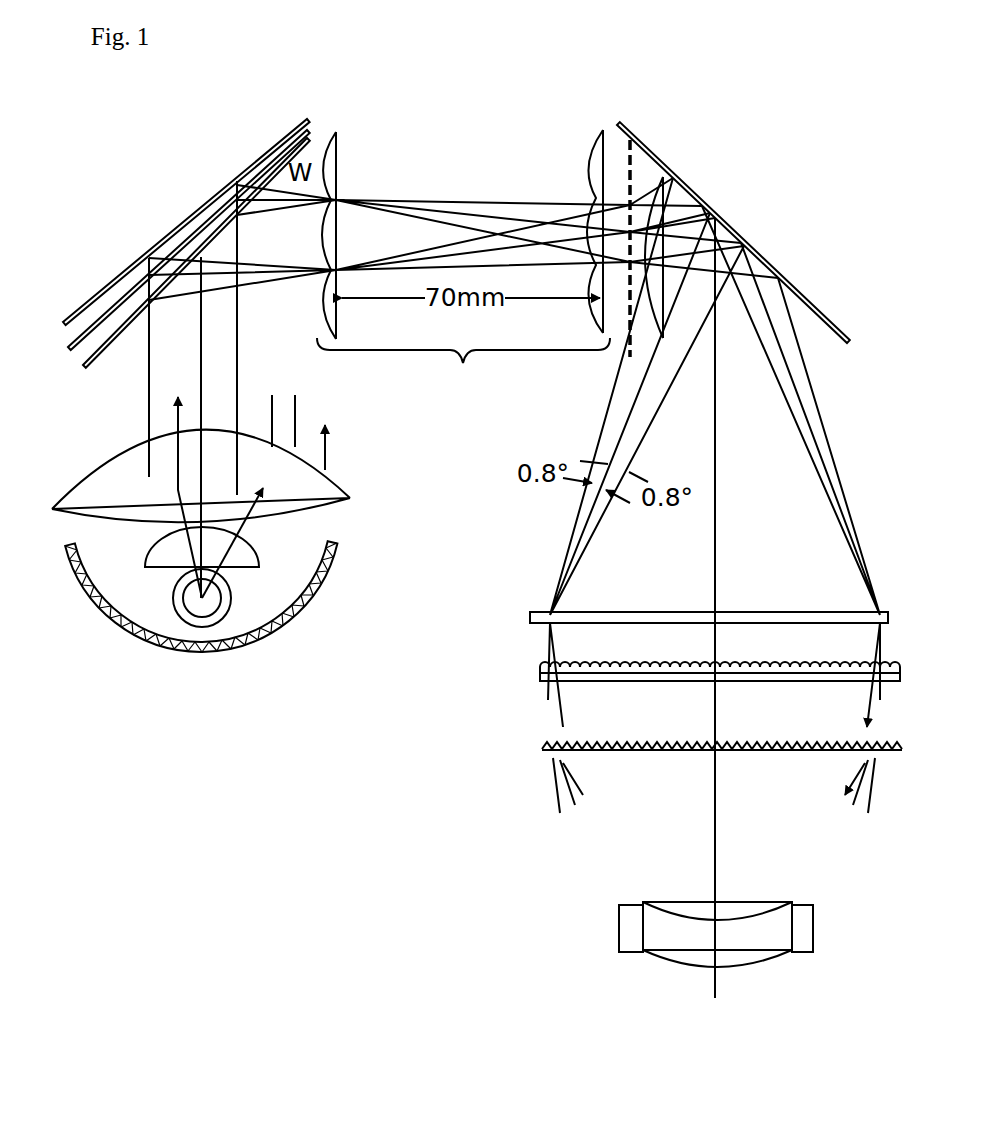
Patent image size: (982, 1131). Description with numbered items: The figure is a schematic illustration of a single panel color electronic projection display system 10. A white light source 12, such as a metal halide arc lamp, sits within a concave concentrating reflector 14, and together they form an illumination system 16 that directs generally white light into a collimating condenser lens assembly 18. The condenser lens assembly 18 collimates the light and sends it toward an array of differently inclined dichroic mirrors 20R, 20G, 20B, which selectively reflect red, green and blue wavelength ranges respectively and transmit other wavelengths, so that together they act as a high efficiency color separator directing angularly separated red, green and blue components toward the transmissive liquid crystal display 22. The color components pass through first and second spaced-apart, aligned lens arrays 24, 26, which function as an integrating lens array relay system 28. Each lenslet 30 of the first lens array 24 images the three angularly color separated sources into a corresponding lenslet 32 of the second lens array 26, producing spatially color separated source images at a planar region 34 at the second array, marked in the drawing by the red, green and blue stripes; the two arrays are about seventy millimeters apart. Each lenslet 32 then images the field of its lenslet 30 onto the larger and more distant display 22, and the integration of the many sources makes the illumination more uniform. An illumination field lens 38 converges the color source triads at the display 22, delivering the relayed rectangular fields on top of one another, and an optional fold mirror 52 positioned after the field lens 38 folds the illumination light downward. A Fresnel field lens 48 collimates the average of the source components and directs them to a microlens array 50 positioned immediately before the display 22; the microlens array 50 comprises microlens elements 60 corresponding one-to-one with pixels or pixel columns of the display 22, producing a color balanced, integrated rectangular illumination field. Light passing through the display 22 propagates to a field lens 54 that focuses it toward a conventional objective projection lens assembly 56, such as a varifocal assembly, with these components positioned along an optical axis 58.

The color electronic projection display system 10 is at (441, 456).
The white light source 12 is at (193, 610).
The concentrating reflector 14 is at (268, 632).
The illumination system 16 is at (308, 610).
The collimating condenser lens assembly 18 is at (339, 520).
The blue dichroic mirror 20B is at (222, 185).
The green dichroic mirror 20G is at (72, 347).
The red dichroic mirror 20R is at (95, 358).
The liquid crystal display 22 is at (613, 684).
The first lens array 24 is at (344, 158).
The second lens array 26 is at (604, 122).
The integrating lens array relay system 28 is at (463, 368).
The lenslet 30 is at (323, 228).
The lenslet 32 is at (582, 157).
The planar region 34 is at (618, 358).
The illumination field lens 38 is at (662, 190).
The Fresnel field lens 48 is at (610, 612).
The microlens array 50 is at (599, 662).
The fold mirror 52 is at (748, 244).
The field lens 54 is at (655, 752).
The objective projection lens assembly 56 is at (619, 935).
The optical axis 58 is at (716, 533).
The microlens elements 60 is at (773, 660).